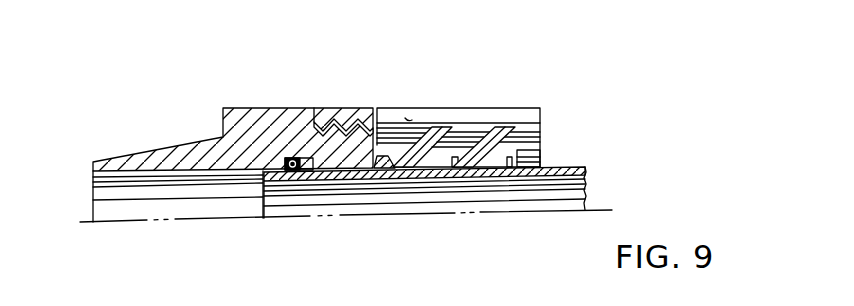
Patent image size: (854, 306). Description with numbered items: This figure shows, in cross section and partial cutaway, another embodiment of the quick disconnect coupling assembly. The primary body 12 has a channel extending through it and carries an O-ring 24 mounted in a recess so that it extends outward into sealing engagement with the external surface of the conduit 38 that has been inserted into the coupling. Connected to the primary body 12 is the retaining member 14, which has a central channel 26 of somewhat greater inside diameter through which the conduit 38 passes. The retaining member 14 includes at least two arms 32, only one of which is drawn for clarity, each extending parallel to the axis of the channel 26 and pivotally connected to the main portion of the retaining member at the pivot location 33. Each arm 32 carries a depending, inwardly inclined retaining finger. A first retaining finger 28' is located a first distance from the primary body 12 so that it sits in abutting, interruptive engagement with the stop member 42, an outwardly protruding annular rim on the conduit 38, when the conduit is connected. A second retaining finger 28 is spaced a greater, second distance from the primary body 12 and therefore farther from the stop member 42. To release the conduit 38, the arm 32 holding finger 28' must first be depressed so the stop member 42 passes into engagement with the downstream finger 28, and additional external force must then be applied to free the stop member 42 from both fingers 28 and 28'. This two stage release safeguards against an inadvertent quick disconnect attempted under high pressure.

The primary body 12 is at (146, 126).
The retaining member 14 is at (495, 82).
The O-ring 24 is at (291, 157).
The central channel 26 is at (536, 160).
The retaining finger 28 is at (501, 199).
The retaining finger 28' is at (441, 161).
The arm 32 is at (518, 108).
The pivotal connection 33 is at (409, 118).
The conduit 38 is at (577, 167).
The stop member 42 is at (389, 154).